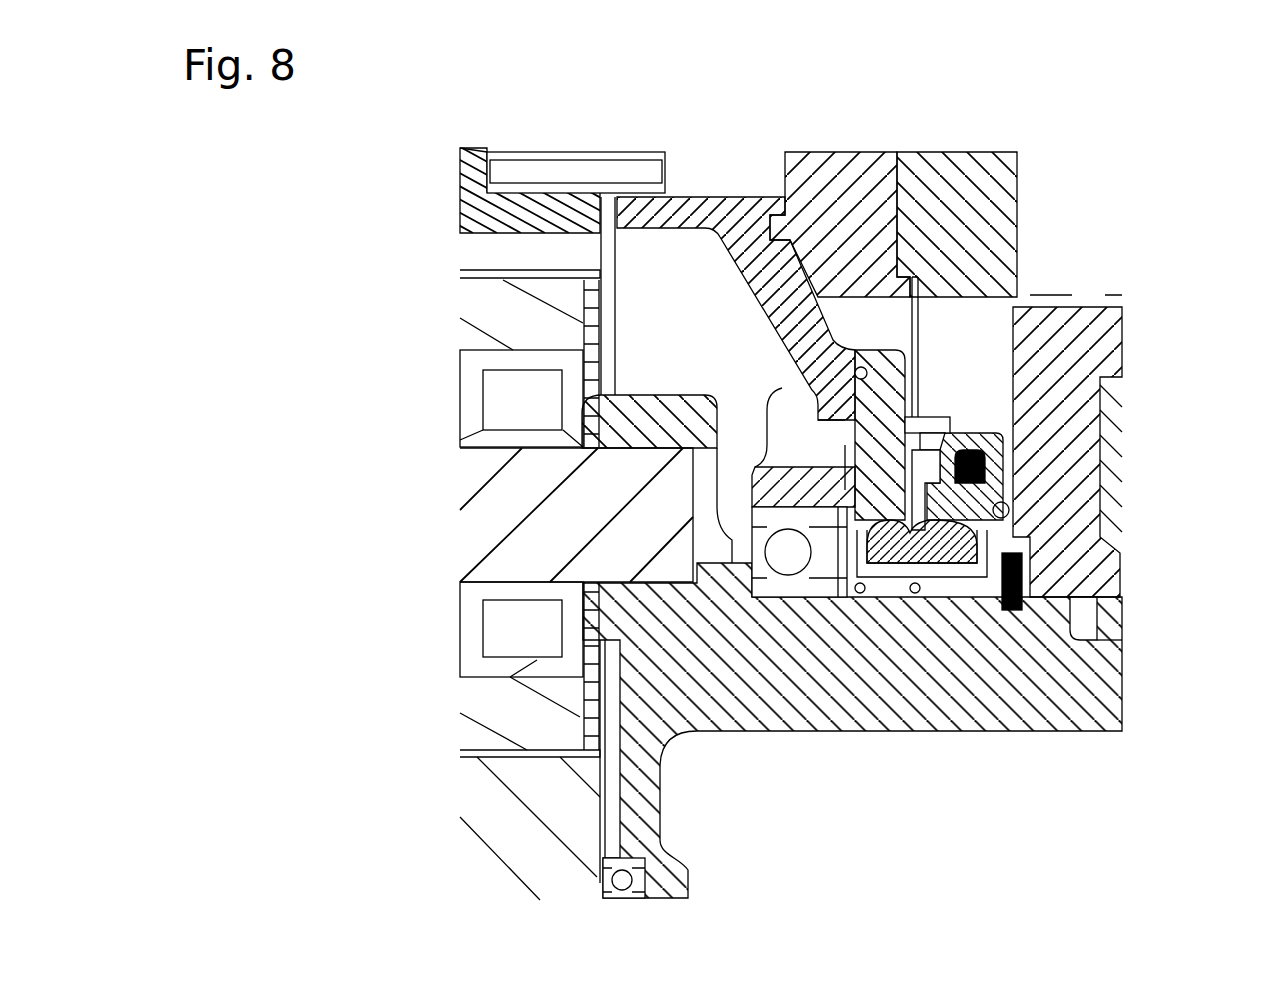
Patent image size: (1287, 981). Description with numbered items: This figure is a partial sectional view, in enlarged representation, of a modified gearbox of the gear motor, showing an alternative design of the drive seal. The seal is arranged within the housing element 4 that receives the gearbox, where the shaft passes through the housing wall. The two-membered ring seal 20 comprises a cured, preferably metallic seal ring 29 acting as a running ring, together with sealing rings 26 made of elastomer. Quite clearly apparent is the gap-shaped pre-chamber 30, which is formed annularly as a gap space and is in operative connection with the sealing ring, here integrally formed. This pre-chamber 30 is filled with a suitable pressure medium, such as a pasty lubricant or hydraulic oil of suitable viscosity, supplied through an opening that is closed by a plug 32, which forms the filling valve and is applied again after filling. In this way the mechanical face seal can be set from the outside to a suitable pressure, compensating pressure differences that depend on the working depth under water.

The housing element 4 is at (992, 187).
The ring seal 20 is at (905, 567).
The sealing rings 26 is at (987, 543).
The seal ring 29 is at (877, 567).
The pre-chamber 30 is at (917, 480).
The plug 32 is at (950, 430).